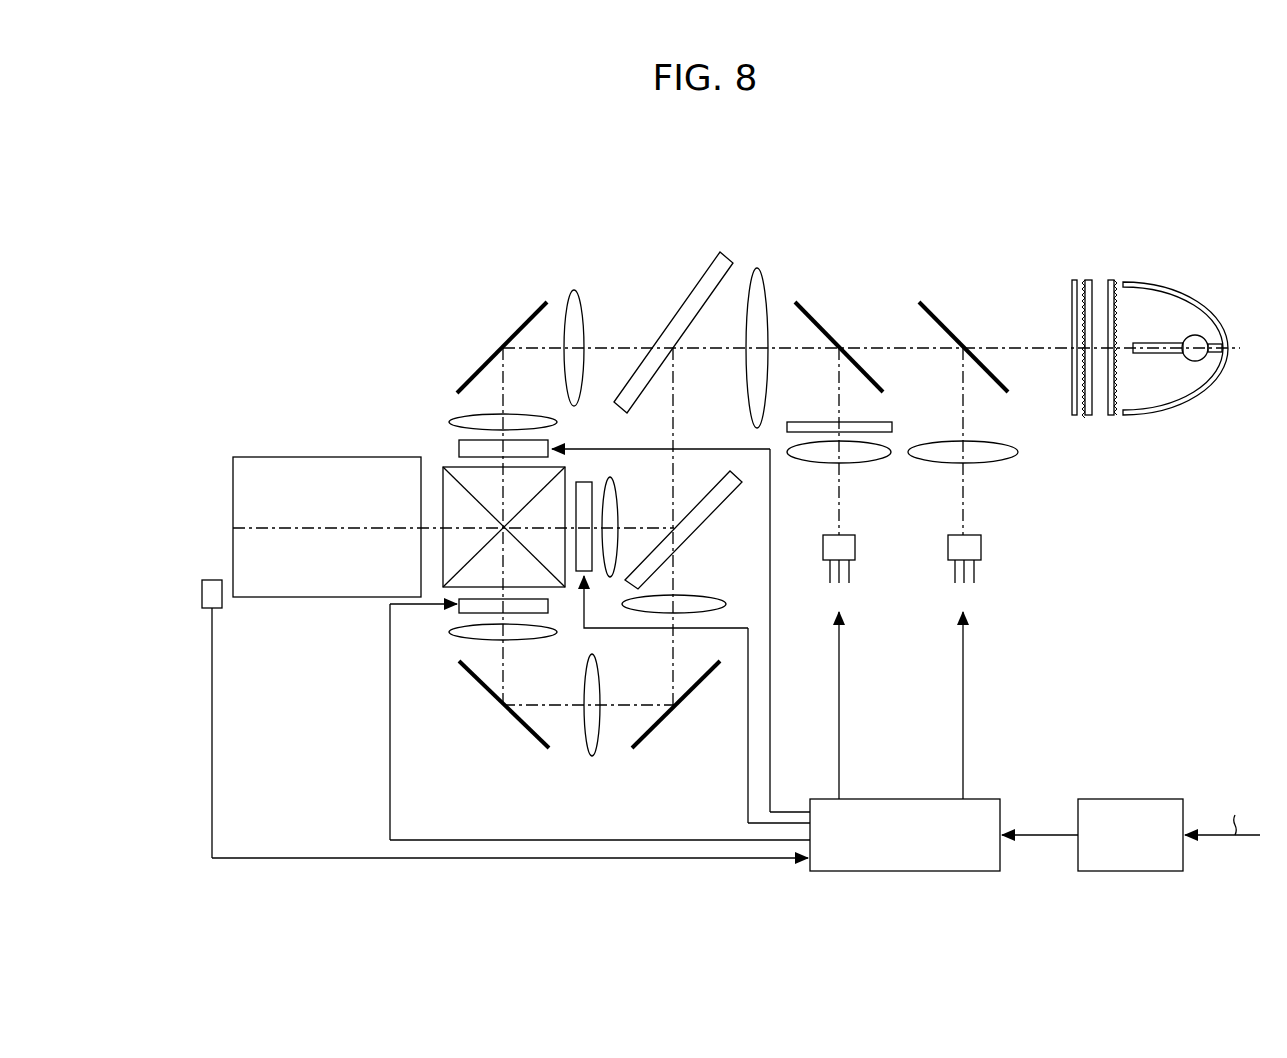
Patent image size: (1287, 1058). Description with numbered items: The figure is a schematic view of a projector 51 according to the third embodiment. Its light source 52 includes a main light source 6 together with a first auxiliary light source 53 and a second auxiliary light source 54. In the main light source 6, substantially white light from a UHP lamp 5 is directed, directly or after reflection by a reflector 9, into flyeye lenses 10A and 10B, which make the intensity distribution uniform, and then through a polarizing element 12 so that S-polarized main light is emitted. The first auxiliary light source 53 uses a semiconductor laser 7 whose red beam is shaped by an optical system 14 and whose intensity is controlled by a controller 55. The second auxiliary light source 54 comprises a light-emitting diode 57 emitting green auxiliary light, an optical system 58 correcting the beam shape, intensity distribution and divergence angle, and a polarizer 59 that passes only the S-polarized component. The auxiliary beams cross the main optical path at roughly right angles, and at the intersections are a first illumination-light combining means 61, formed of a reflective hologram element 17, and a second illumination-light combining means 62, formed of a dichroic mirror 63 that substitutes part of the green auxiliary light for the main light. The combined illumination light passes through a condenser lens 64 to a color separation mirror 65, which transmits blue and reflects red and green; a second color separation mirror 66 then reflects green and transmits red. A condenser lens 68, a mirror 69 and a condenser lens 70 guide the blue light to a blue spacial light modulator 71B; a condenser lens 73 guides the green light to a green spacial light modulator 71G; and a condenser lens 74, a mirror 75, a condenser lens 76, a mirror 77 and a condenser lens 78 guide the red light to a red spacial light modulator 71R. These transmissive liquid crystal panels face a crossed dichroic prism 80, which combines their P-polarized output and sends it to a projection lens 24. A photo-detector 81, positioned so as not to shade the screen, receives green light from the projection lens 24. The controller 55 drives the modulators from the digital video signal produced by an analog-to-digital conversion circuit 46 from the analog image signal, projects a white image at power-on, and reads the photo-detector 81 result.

The projector 51 is at (335, 338).
The main light source 6 is at (1185, 316).
The reflector 9 is at (1215, 313).
The UHP lamp 5 is at (1195, 361).
The polarizing element 12 is at (1067, 298).
The flyeye lens 10A is at (1111, 280).
The flyeye lens 10B is at (1088, 280).
The reflective hologram element 17 is at (950, 326).
The first illumination-light combining means 61 is at (942, 283).
The second illumination-light combining means 62 is at (812, 283).
The dichroic mirror 63 is at (823, 327).
The condenser lens 64 is at (755, 268).
The color separation mirror 65 is at (697, 282).
The condenser lens 68 is at (574, 290).
The mirror 69 is at (530, 312).
The condenser lens 70 is at (455, 420).
The blue spacial light modulator 71B is at (459, 449).
The green spacial light modulator 71G is at (584, 482).
The red spacial light modulator 71R is at (459, 608).
The condenser lens 73 is at (617, 510).
The color separation mirror 66 is at (706, 518).
The condenser lens 74 is at (715, 600).
The mirror 75 is at (658, 722).
The condenser lens 76 is at (592, 757).
The mirror 77 is at (492, 693).
The condenser lens 78 is at (530, 638).
The crossed dichroic prism 80 is at (448, 545).
The projection lens 24 is at (278, 457).
The photo-detector 81 is at (210, 580).
The polarizer 59 is at (892, 427).
The optical system 58 is at (858, 463).
The optical system 14 is at (988, 463).
The light-emitting diode 57 is at (855, 547).
The semiconductor laser 7 is at (981, 547).
The light source 52 is at (1058, 470).
The first auxiliary light source 53 is at (995, 597).
The second auxiliary light source 54 is at (868, 597).
The controller 55 is at (905, 873).
The analog-to-digital conversion circuit 46 is at (1130, 873).